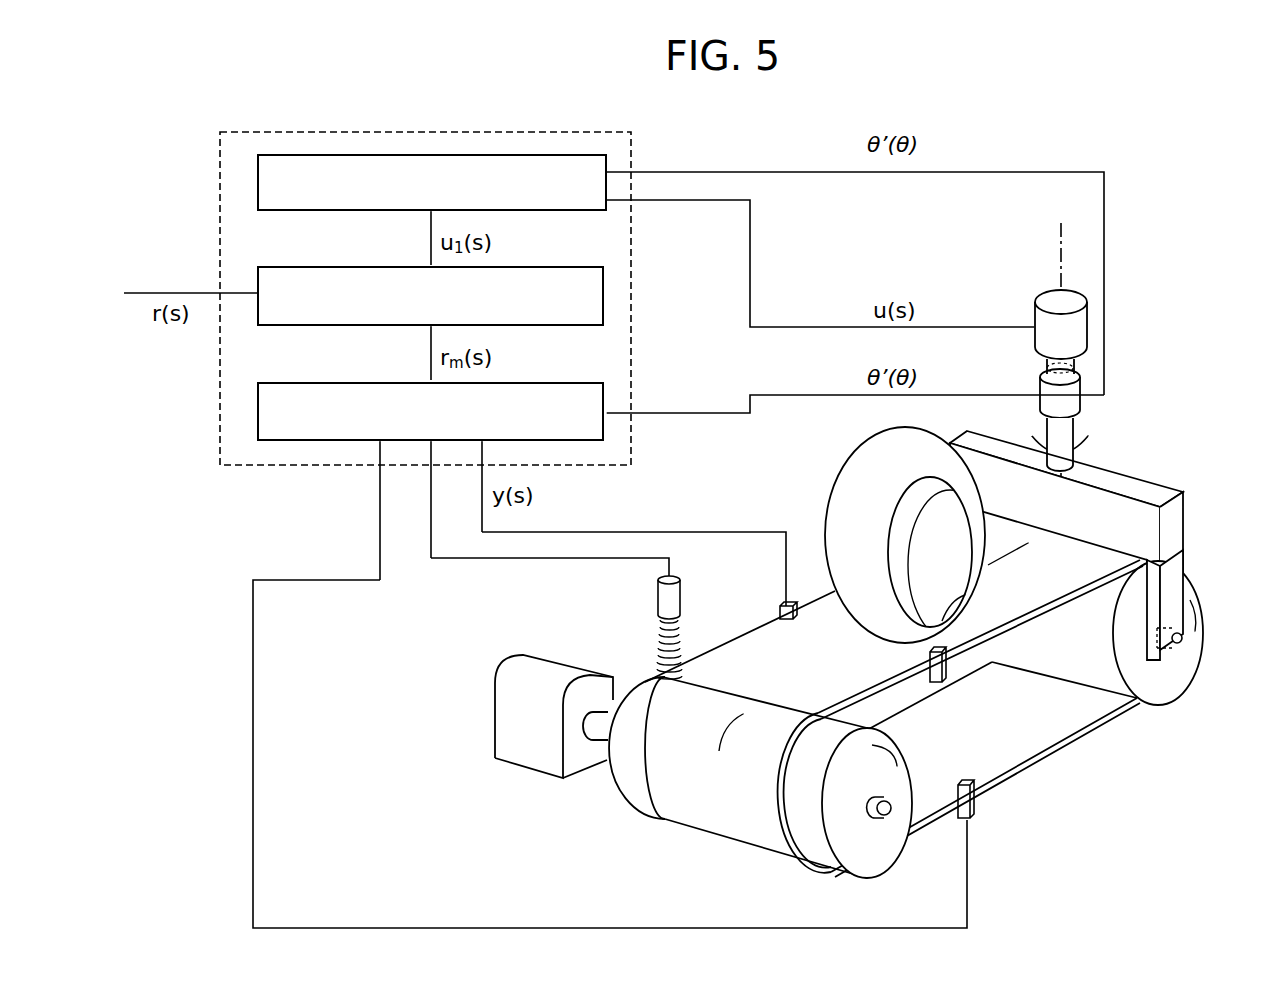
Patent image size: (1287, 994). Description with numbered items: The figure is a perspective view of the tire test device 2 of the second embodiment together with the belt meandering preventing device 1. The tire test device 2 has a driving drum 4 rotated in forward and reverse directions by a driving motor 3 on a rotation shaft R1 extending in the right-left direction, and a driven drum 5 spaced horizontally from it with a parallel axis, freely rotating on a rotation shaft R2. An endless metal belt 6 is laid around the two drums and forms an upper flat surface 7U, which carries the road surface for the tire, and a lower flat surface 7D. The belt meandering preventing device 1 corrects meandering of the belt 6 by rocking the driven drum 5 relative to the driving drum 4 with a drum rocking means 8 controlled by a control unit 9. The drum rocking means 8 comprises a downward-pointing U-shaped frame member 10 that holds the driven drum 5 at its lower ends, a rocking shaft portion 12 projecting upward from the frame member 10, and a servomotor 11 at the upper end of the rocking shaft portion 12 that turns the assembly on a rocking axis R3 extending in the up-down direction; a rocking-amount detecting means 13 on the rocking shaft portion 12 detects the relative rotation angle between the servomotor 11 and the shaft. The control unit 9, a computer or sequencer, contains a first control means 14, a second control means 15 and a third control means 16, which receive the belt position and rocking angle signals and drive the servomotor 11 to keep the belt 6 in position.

The belt meandering preventing device 1 is at (1200, 240).
The tire test device 2 is at (1189, 453).
The driving motor 3 is at (515, 727).
The driving drum 4 is at (627, 790).
The driven drum 5 is at (1187, 677).
The belt 6 is at (1103, 718).
The upper flat surface 7U is at (840, 679).
The lower flat surface 7D is at (1043, 755).
The drum rocking means 8 is at (1099, 361).
The control unit 9 is at (463, 132).
The frame member 10 is at (1186, 502).
The servomotor 11 is at (1080, 333).
The rocking shaft portion 12 is at (1068, 427).
The rocking-amount detecting means 13 is at (1077, 400).
The first control means 14 is at (258, 272).
The second control means 15 is at (258, 178).
The third control means 16 is at (258, 417).
The rotation shaft R1 is at (892, 812).
The rotation shaft R2 is at (1203, 638).
The rocking axis R3 is at (1062, 243).